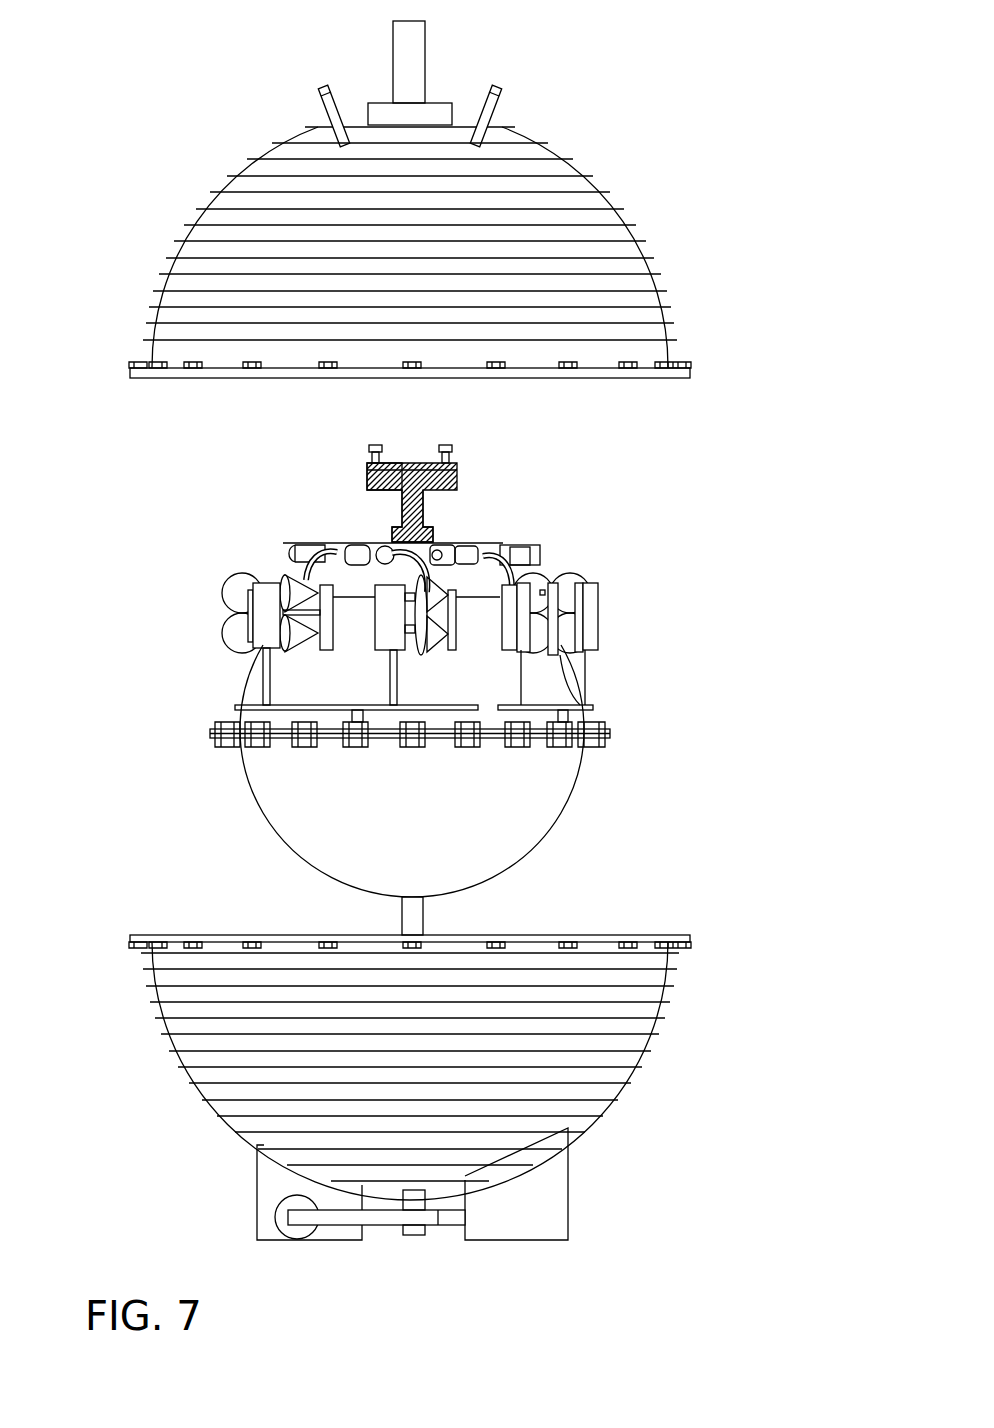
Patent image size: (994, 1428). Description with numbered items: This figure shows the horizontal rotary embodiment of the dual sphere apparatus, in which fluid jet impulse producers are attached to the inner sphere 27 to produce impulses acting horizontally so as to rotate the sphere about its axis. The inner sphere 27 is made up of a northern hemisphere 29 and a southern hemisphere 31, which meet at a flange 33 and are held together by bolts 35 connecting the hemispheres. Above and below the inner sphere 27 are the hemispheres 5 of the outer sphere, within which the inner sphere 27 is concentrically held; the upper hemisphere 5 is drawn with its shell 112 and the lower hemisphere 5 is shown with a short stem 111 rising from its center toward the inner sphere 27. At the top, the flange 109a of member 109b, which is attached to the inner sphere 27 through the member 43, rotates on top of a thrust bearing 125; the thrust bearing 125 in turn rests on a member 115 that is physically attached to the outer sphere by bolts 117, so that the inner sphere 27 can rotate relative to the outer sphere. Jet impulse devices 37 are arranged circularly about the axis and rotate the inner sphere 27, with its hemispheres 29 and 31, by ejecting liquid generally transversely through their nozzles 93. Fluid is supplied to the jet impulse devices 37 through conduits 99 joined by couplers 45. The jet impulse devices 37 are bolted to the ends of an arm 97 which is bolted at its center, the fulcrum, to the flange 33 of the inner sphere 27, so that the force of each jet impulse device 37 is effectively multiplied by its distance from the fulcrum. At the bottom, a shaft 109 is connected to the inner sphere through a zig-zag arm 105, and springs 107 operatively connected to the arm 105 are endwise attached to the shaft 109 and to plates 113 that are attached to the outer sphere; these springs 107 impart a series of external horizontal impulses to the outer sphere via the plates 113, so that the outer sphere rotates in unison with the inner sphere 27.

The hemisphere of outer sphere 5 is at (436, 624).
The inner sphere 27 is at (639, 429).
The northern hemisphere 29 is at (180, 533).
The southern hemisphere 31 is at (193, 893).
The flange 33 is at (212, 735).
The bolts connecting the hemisphere 35 is at (563, 748).
The jet impulse devices 37 is at (258, 622).
The member 43 is at (398, 545).
The couplers 45 is at (287, 548).
The nozzles 93 is at (293, 645).
The arm 97 is at (583, 705).
The conduits 99 is at (520, 565).
The arm 105 is at (373, 1220).
The springs 107 is at (270, 1225).
The shaft 109 is at (425, 1233).
The flange 109a is at (400, 462).
The member 109b is at (423, 520).
The stem post 111 is at (398, 926).
The upper shell ribs 112 is at (160, 270).
The plates 113 is at (268, 1190).
The member 115 is at (457, 483).
The bolts 117 is at (450, 447).
The thrust bearing 125 is at (457, 465).